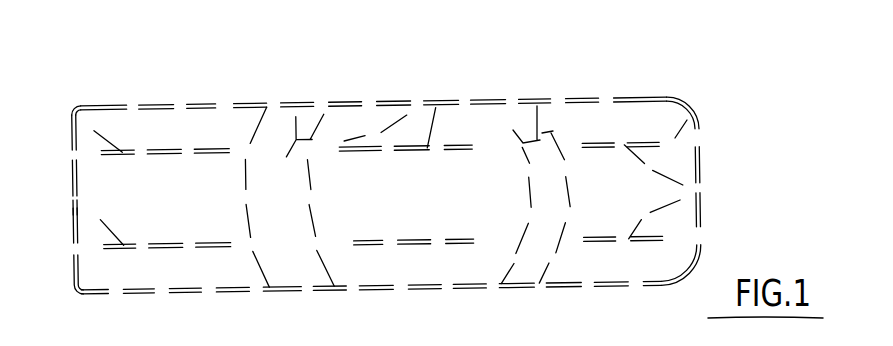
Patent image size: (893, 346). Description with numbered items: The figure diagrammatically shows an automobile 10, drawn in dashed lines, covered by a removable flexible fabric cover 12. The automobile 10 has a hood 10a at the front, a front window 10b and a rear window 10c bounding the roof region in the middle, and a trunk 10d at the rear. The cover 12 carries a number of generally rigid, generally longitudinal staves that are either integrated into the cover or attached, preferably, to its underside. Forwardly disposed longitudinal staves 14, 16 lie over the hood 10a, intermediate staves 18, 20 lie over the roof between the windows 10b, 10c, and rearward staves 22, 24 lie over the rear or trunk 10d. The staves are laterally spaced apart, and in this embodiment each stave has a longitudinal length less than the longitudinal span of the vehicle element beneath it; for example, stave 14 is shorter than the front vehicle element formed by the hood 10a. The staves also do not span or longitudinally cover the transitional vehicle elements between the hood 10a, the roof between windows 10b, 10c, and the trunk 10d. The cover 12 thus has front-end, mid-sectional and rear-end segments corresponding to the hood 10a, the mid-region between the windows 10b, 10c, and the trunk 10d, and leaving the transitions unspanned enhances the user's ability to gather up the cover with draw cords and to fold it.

The automobile 10 is at (155, 110).
The hood 10a is at (233, 124).
The front window 10b is at (443, 105).
The rear window 10c is at (537, 104).
The trunk 10d is at (706, 170).
The cover 12 is at (83, 107).
The forwardly disposed longitudinal stave 14 is at (75, 130).
The forwardly disposed longitudinal stave 16 is at (75, 211).
The intermediate stave 18 is at (508, 122).
The intermediate stave 20 is at (403, 247).
The rearward stave 22 is at (700, 184).
The rearward stave 24 is at (702, 207).